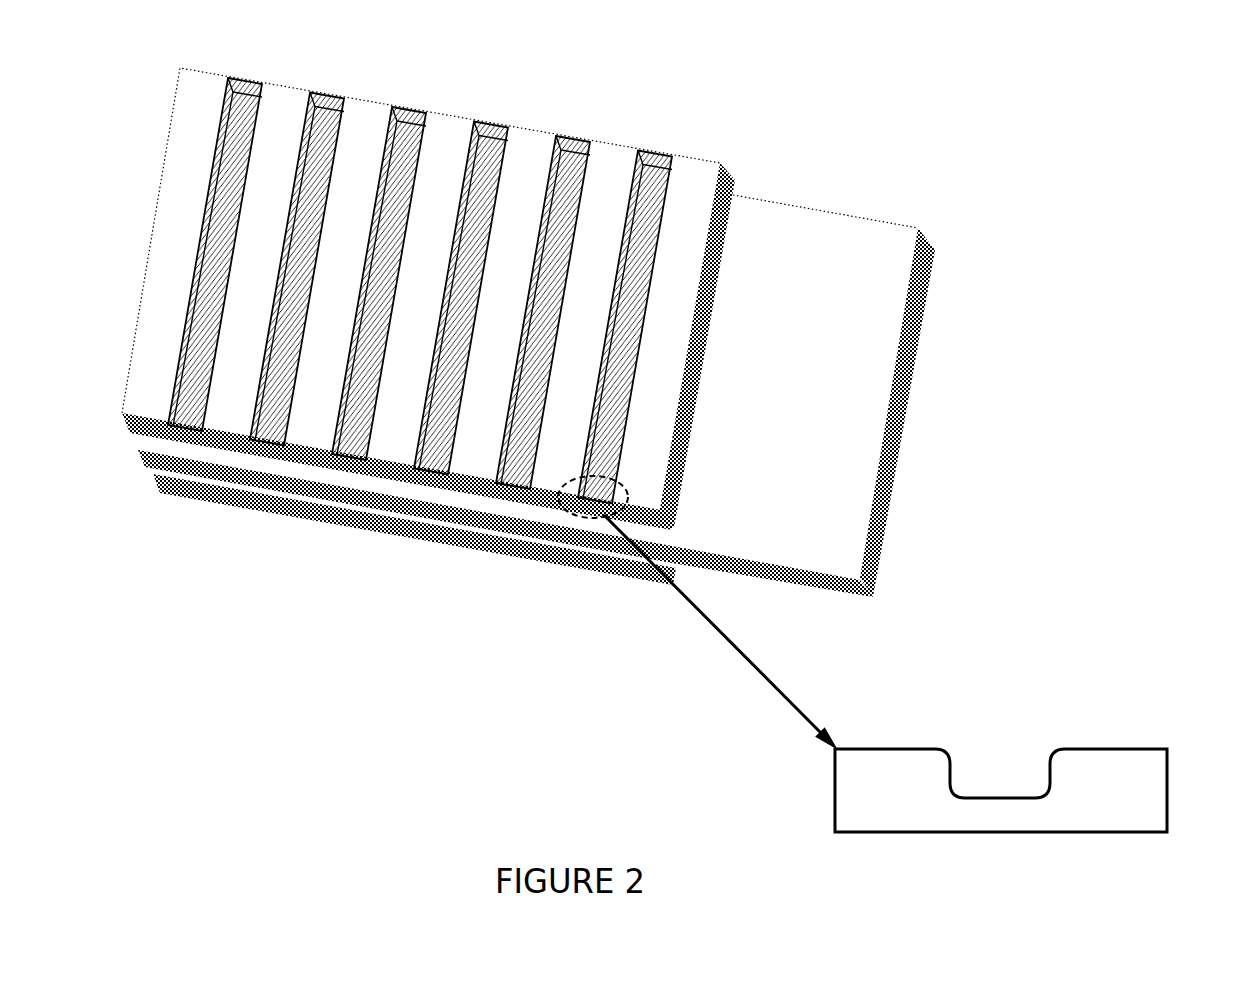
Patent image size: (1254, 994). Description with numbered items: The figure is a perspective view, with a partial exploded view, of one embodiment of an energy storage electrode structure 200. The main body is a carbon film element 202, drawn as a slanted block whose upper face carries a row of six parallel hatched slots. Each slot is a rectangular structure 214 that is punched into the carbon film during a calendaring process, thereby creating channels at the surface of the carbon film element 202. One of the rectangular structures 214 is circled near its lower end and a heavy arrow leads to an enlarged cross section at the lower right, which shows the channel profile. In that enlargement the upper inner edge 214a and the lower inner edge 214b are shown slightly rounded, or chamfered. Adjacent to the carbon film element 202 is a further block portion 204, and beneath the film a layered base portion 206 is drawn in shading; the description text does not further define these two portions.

The energy storage electrode structure 200 is at (432, 769).
The carbon film element 202 is at (445, 123).
The second body portion 204 is at (902, 250).
The base layers 206 is at (370, 525).
The rectangular structure 214 is at (595, 493).
The upper inner edge 214a is at (948, 750).
The lower inner edge 214b is at (957, 798).